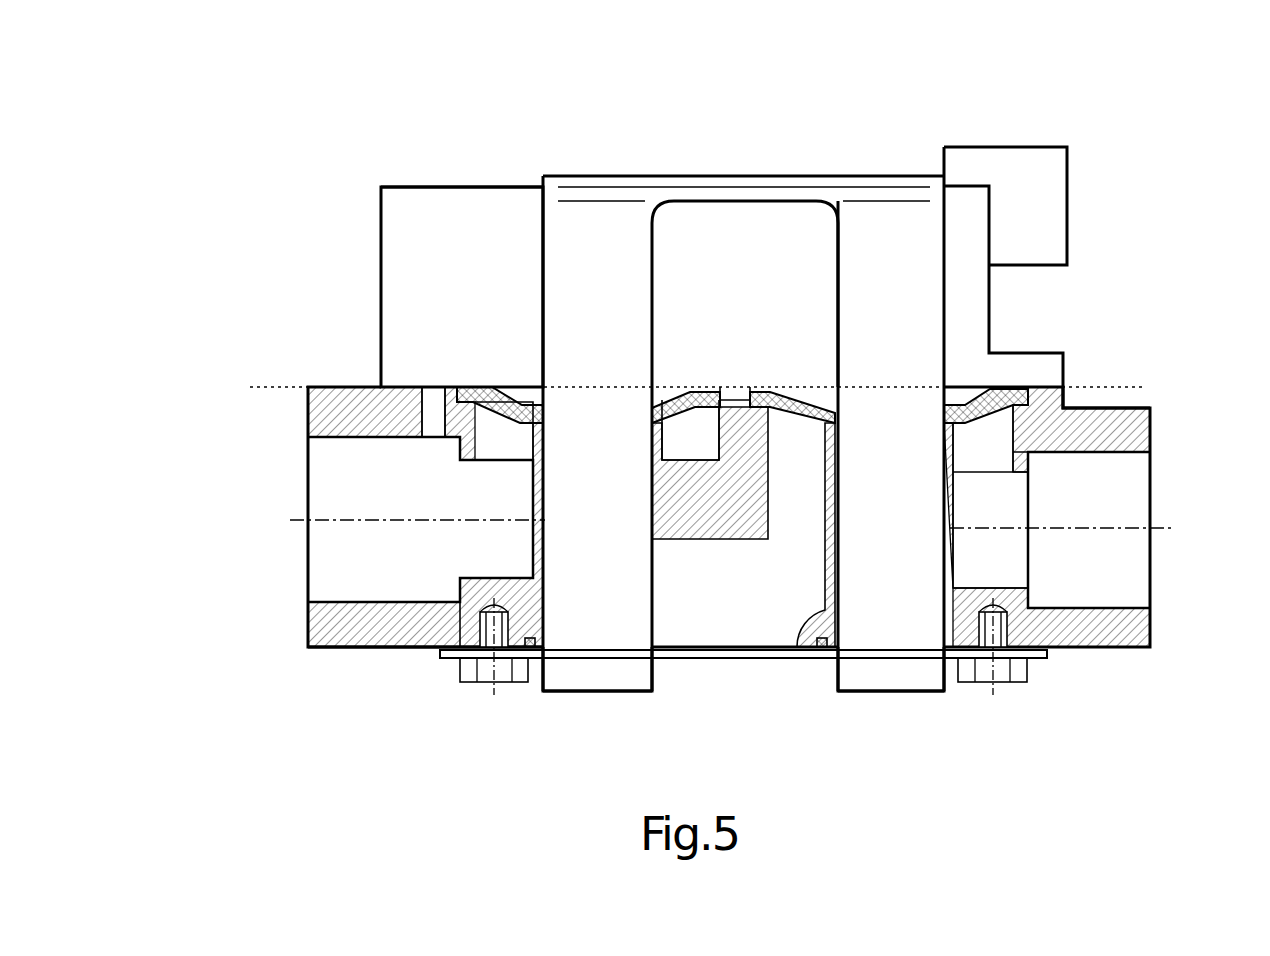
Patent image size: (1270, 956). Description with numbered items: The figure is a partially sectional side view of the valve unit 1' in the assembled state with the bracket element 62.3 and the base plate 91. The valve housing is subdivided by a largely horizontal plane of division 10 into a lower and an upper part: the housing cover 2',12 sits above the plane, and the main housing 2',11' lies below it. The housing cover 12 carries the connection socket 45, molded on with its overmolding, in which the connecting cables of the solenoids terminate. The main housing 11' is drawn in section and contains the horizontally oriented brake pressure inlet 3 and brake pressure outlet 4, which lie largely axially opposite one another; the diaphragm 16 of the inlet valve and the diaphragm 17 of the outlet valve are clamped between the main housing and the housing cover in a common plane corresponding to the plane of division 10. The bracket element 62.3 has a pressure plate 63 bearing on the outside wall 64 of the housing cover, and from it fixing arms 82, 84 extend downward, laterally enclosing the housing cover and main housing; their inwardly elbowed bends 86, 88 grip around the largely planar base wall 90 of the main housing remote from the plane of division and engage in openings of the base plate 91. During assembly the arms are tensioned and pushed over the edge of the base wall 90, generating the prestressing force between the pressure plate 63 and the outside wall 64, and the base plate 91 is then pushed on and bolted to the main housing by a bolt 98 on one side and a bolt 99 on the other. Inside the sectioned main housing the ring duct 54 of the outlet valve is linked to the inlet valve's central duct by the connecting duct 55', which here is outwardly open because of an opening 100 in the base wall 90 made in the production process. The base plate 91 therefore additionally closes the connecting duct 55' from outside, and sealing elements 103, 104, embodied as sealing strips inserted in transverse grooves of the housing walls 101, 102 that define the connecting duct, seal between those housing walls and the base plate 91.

The valve unit 1' is at (197, 98).
The valve housing and housing cover 2',12 is at (462, 220).
The housing cover 12 is at (455, 285).
The outside wall of the housing cover 64 is at (519, 168).
The fixing arm 82 is at (601, 285).
The fixing arm 84 is at (880, 285).
The pressure plate 63 is at (697, 175).
The bracket element 62.3 is at (748, 193).
The inwardly elbowed bend 86 is at (593, 672).
The inwardly elbowed bend 88 is at (893, 672).
The connection socket 45 is at (1033, 208).
The plane of division 10 is at (248, 387).
The valve housing and main housing 2',11' is at (344, 517).
The main housing 11' is at (344, 517).
The brake pressure inlet 3 is at (342, 568).
The diaphragm 16 is at (510, 418).
The base wall 90 is at (325, 633).
The ring duct 54 is at (815, 469).
The connecting duct 55' is at (745, 615).
The housing wall 102 is at (808, 632).
The sealing element 104 is at (822, 648).
The opening 100 is at (705, 653).
The diaphragm 17 is at (1013, 420).
The brake pressure outlet 4 is at (1080, 572).
The base plate 91 is at (737, 660).
The bolt 98 is at (486, 672).
The bolt 99 is at (1003, 672).
The sealing element 103 is at (530, 645).
The housing wall 101 is at (475, 598).